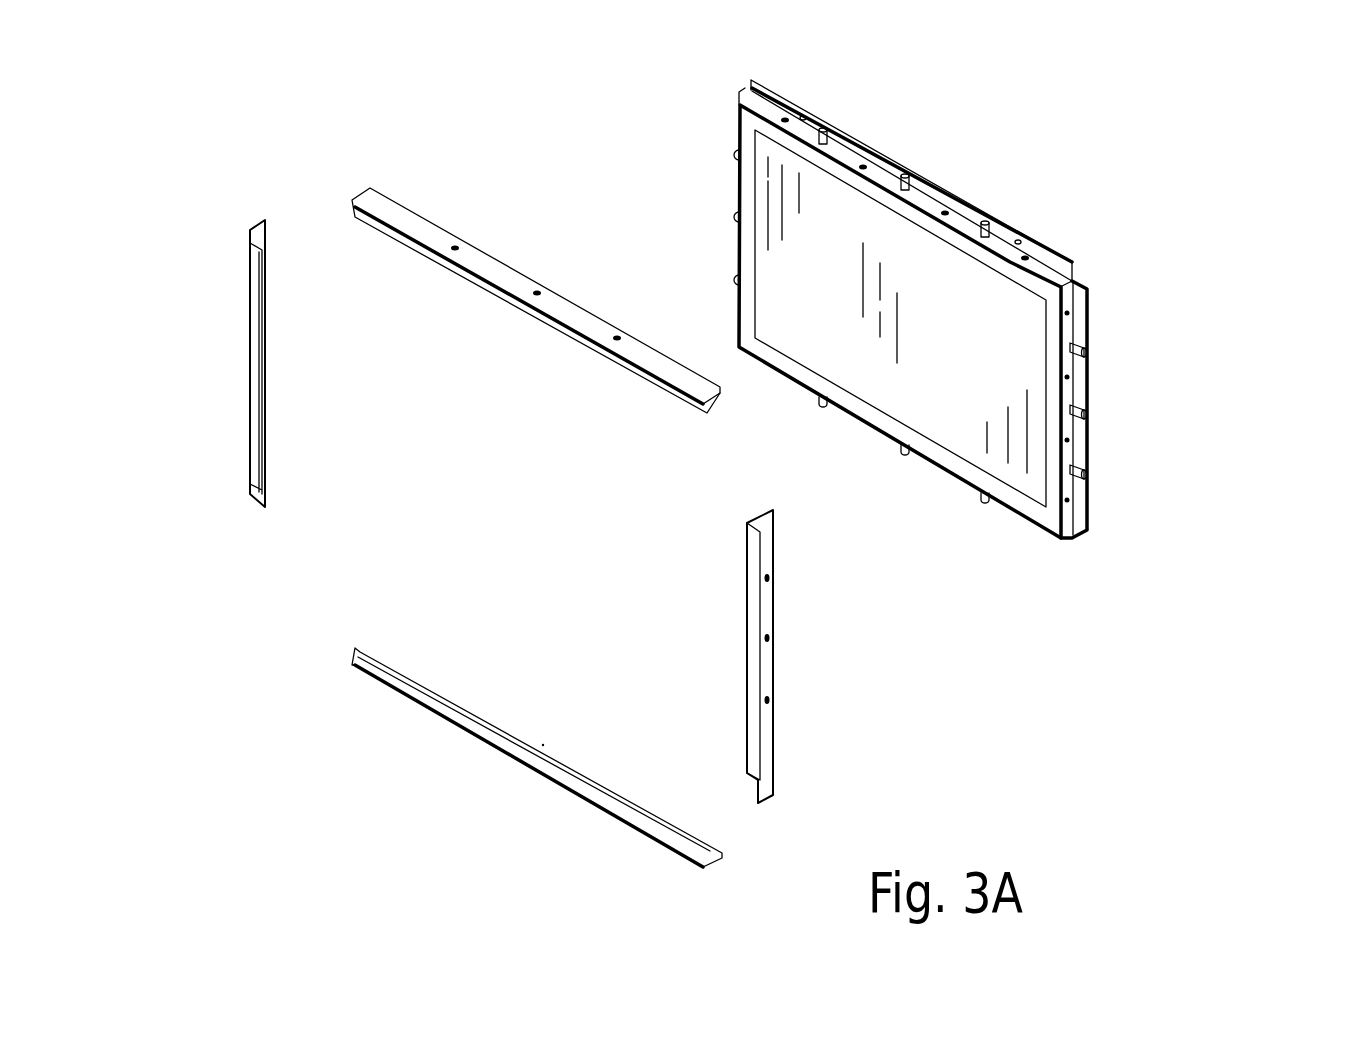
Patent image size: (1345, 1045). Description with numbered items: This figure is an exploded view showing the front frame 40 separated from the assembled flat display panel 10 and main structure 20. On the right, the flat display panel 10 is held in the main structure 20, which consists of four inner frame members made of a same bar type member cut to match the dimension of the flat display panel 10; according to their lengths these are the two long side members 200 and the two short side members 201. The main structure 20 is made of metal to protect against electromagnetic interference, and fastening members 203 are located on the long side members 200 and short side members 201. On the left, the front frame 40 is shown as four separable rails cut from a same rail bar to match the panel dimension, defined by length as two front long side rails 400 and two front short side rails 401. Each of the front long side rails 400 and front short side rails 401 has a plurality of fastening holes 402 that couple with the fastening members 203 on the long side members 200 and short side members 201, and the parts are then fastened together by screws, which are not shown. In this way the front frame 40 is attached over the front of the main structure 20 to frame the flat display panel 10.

The flat display panel 10 is at (910, 388).
The main structure 20 is at (1272, 125).
The long side members 200 is at (1045, 273).
The short side members 201 is at (1070, 300).
The fastening members 203 is at (825, 128).
The front frame 40 is at (256, 591).
The front long side rails 400 is at (530, 313).
The front short side rails 401 is at (262, 360).
The fastening holes 402 is at (455, 245).